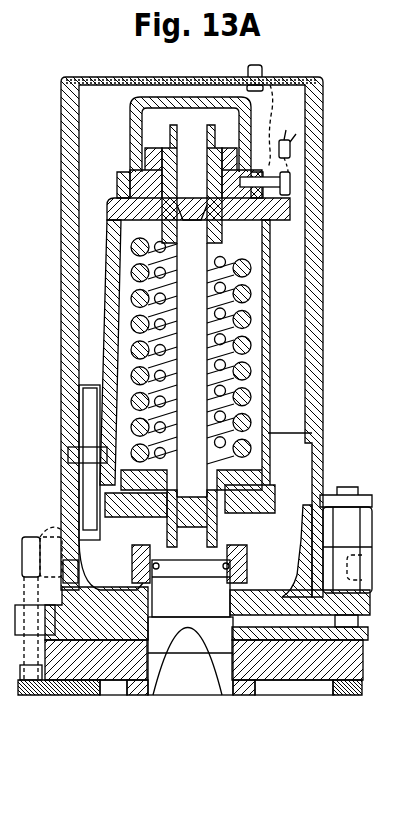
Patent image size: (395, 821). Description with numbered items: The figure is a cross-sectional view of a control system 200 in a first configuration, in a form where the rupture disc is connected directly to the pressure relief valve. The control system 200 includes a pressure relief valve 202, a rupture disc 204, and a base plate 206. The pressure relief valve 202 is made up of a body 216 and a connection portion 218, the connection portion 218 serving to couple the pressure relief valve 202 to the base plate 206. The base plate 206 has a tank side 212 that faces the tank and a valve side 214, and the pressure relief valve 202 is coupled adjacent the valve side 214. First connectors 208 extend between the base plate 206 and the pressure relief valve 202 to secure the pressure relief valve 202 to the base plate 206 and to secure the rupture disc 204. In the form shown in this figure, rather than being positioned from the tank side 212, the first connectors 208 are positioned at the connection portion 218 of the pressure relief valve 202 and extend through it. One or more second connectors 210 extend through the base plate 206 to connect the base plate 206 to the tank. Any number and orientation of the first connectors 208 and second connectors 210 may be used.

The control system 200 is at (56, 416).
The pressure relief valve 202 is at (278, 298).
The rupture disc 204 is at (213, 675).
The base plate 206 is at (363, 655).
The first connectors 208 is at (17, 607).
The second connectors 210 is at (38, 537).
The tank side 212 is at (115, 690).
The valve side 214 is at (65, 690).
The body 216 is at (280, 356).
The connection portion 218 is at (165, 692).